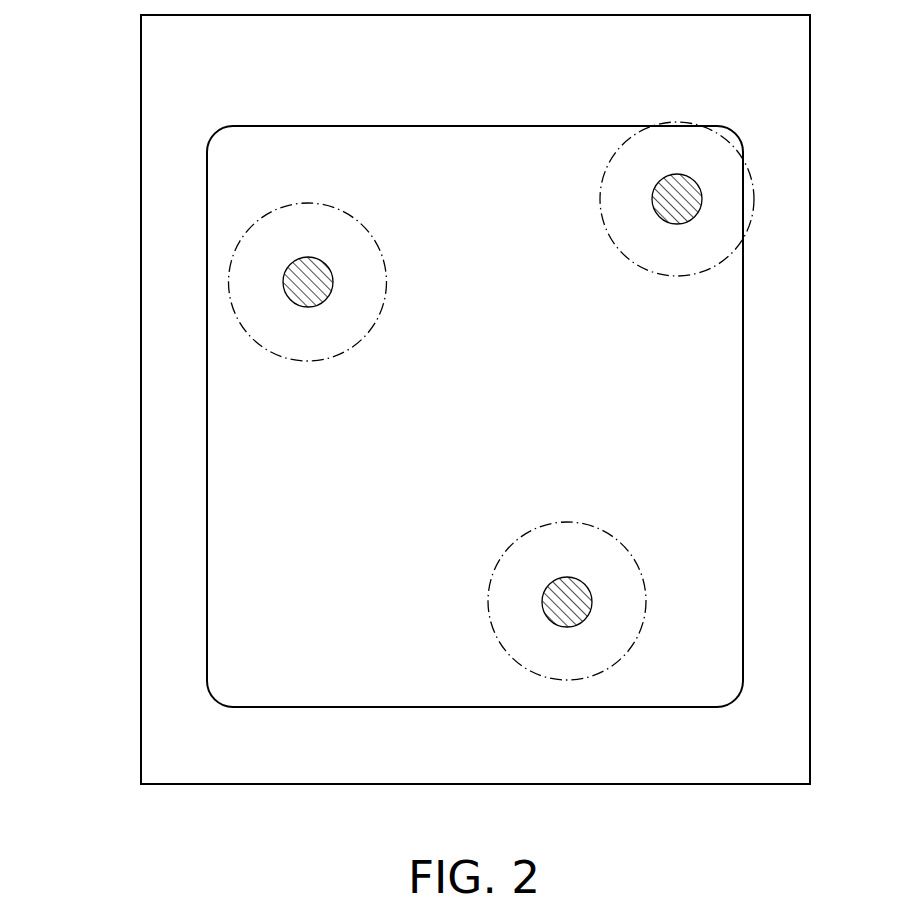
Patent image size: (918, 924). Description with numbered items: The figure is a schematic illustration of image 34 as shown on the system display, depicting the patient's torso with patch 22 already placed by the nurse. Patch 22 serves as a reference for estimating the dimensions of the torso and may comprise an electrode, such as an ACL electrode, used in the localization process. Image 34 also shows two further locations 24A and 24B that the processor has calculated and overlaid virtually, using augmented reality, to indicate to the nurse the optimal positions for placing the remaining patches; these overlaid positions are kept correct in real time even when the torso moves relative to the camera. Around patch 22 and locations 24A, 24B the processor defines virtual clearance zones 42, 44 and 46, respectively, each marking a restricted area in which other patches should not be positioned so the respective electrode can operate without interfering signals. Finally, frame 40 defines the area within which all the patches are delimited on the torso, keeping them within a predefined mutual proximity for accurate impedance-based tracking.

The image 34 is at (118, 82).
The frame 40 is at (263, 126).
The virtual clearance zone 42 is at (596, 186).
The patch 22 is at (673, 173).
The virtual clearance zone 44 is at (347, 213).
The location 24A is at (333, 282).
The virtual clearance zone 46 is at (491, 572).
The location 24B is at (556, 585).